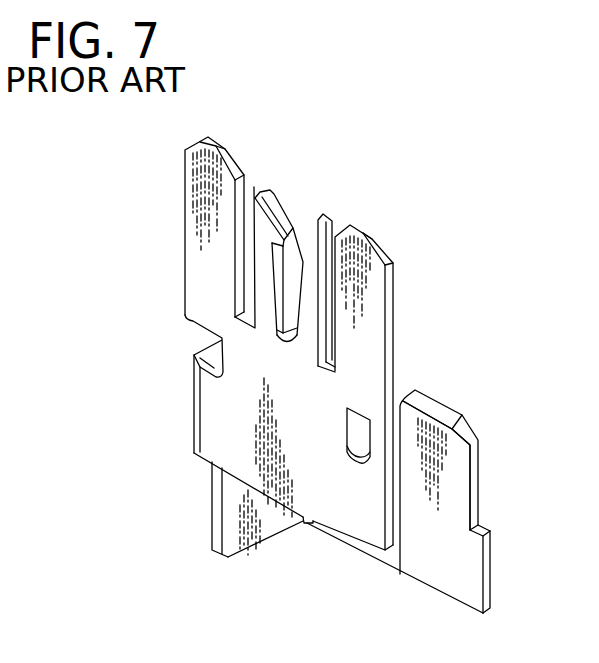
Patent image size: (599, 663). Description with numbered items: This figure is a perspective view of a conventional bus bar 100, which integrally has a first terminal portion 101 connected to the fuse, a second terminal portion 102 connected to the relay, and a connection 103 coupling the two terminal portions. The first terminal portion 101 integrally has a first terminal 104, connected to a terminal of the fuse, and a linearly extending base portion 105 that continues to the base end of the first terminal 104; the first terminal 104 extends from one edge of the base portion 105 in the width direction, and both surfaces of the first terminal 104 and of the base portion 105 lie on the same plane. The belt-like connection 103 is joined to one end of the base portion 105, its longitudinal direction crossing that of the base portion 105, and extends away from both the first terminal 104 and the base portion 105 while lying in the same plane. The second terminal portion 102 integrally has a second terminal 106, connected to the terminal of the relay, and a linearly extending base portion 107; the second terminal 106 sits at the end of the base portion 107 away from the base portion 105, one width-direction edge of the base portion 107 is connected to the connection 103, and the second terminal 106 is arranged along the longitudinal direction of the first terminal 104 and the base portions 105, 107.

The bus bar 100 is at (273, 138).
The first terminal portion 101 is at (399, 332).
The second terminal portion 102 is at (492, 561).
The connection 103 is at (266, 548).
The first terminal 104 is at (281, 212).
The base portion 105 is at (316, 484).
The second terminal 106 is at (452, 447).
The base portion 107 is at (433, 570).